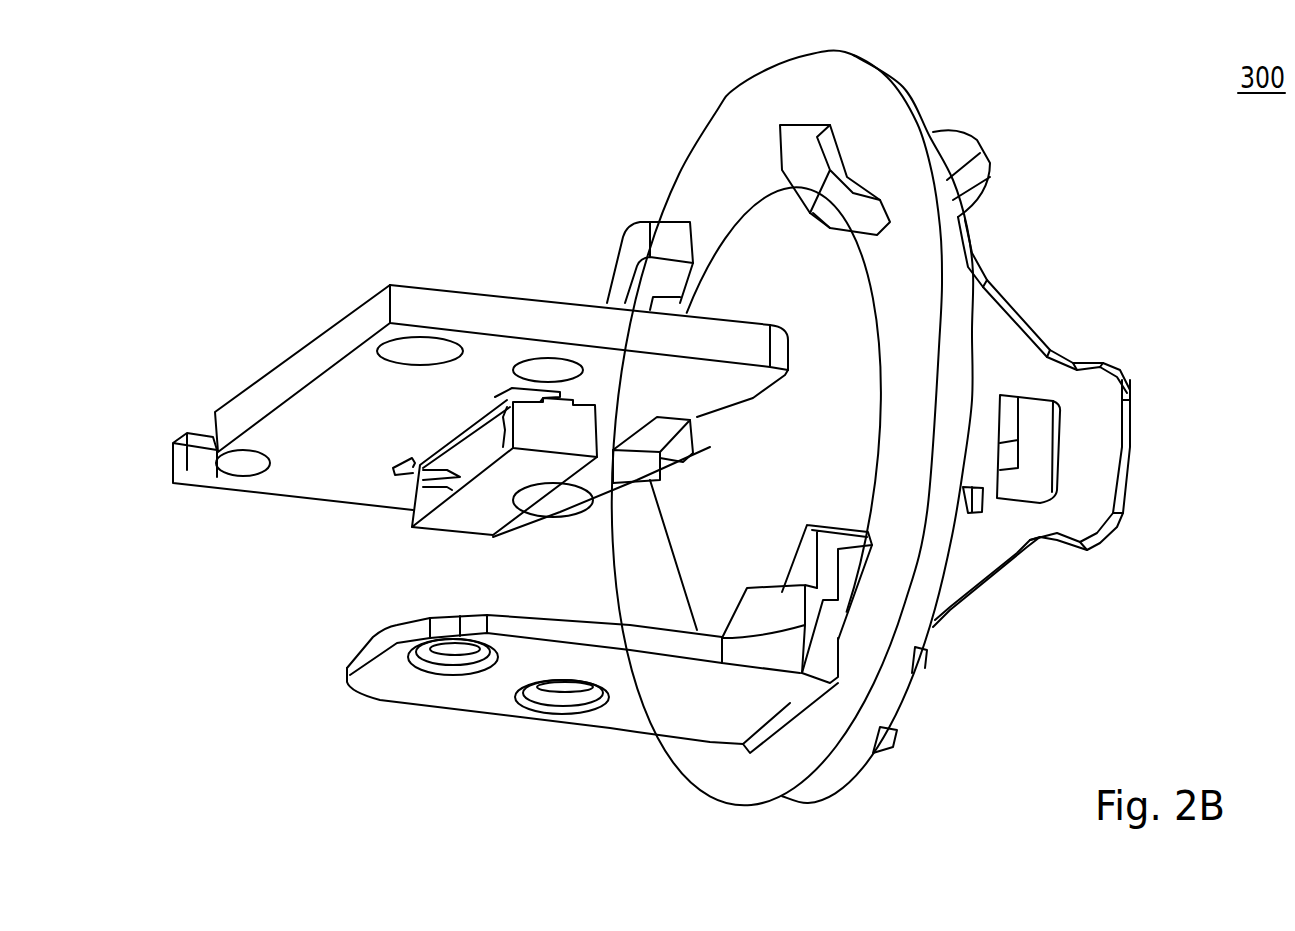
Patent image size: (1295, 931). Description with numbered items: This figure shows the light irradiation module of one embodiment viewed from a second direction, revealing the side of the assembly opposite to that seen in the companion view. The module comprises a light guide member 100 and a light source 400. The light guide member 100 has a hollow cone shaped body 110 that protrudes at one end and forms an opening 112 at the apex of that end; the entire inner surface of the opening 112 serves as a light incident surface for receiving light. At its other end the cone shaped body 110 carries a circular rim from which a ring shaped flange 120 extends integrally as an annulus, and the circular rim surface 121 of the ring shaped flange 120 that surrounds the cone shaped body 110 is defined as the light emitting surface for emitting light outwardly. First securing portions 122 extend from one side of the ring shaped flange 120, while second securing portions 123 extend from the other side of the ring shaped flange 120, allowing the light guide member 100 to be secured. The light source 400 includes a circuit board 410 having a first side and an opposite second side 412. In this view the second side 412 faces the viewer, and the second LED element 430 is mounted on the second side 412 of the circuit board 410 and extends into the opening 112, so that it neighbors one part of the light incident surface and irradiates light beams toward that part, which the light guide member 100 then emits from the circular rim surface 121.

The light guide member 100 is at (1035, 177).
The cone shaped body 110 is at (763, 240).
The opening 112 is at (697, 422).
The ring shaped flange 120 is at (890, 167).
The circular rim surface 121 is at (942, 238).
The first securing portions 122 is at (830, 170).
The second securing portions 123 is at (1088, 468).
The light source 400 is at (373, 177).
The circuit board 410 is at (289, 499).
The second side 412 is at (350, 402).
The second LED element 430 is at (647, 477).